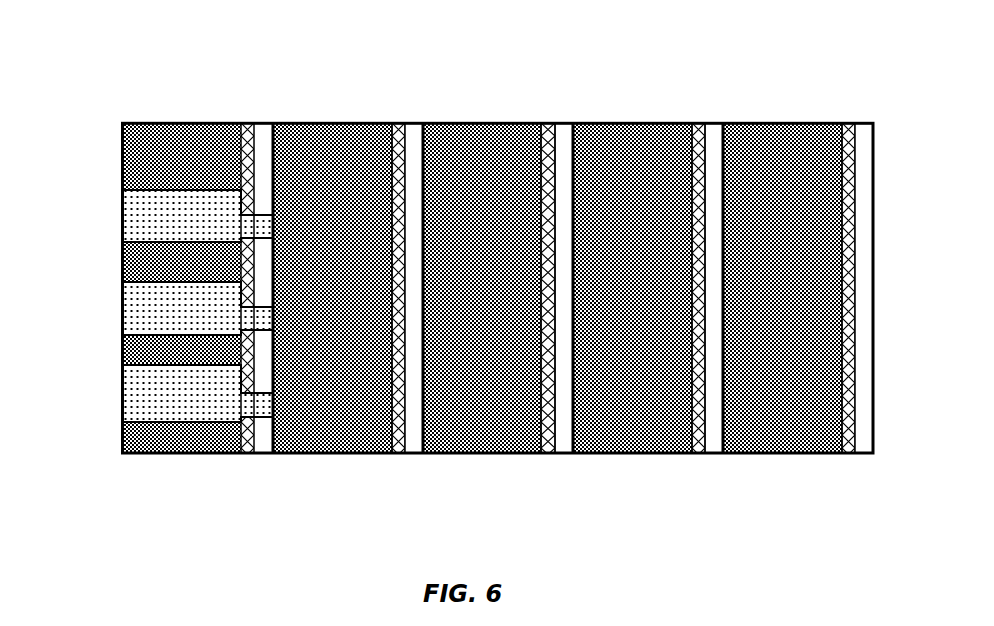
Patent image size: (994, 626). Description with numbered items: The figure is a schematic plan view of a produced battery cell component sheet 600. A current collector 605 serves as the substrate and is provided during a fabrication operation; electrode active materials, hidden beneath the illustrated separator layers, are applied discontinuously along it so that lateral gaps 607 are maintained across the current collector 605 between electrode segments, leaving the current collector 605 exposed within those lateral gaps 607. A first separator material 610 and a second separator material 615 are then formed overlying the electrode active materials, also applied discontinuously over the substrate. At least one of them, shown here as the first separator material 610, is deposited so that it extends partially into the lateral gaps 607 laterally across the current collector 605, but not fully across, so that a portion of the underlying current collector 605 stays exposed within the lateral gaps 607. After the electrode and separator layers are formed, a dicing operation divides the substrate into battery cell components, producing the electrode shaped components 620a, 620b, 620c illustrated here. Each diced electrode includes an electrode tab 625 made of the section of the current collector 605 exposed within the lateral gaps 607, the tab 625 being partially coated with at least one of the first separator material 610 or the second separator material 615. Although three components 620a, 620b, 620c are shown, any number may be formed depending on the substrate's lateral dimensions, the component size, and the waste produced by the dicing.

The battery cell stack 600 is at (136, 80).
The current collector 605 is at (873, 123).
The lateral gaps 607 is at (405, 123).
The first separator material 610 is at (693, 453).
The second separator material 615 is at (620, 123).
The electrode shaped component 620a is at (121, 207).
The electrode shaped component 620b is at (121, 300).
The electrode shaped component 620c is at (121, 393).
The electrode tab 625 is at (271, 433).